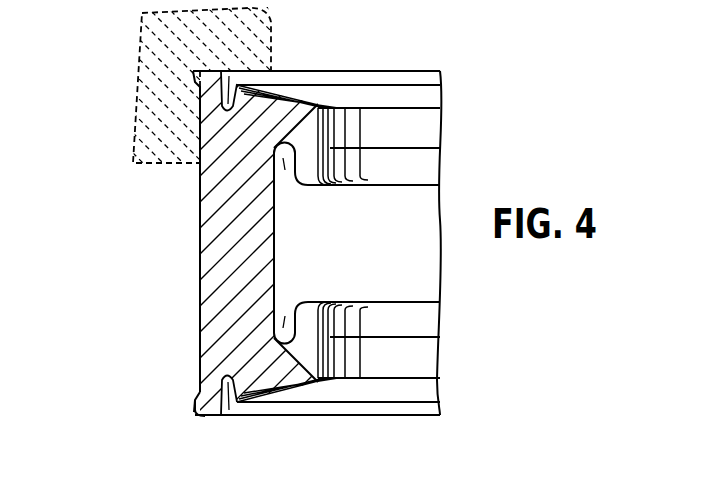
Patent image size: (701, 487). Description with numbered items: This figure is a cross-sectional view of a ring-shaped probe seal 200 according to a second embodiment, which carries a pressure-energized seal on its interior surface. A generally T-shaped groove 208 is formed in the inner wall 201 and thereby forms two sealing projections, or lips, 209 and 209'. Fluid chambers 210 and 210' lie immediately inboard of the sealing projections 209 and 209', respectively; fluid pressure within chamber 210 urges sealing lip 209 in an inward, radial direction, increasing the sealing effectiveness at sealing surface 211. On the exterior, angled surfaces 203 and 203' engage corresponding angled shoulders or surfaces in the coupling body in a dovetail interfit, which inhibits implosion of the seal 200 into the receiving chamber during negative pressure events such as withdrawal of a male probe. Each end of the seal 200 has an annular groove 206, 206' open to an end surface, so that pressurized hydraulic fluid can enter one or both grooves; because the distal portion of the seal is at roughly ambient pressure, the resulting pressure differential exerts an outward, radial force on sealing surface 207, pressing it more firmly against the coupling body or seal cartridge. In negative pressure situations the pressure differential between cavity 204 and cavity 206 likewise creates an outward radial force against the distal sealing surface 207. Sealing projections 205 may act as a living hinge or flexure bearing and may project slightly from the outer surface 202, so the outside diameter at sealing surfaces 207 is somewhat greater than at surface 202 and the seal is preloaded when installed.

The probe seal 200 is at (470, 98).
The inner wall 201 is at (421, 140).
The outer surface 202 is at (200, 291).
The angled surface 203 is at (309, 104).
The angled surface 203' is at (311, 385).
The cavity 204 is at (199, 168).
The sealing projection 205 is at (201, 417).
The annular groove 206 is at (136, 62).
The annular groove 206' is at (234, 426).
The sealing surface 207 is at (193, 410).
The T-shaped groove 208 is at (281, 252).
The sealing projection 209 is at (422, 164).
The sealing projection 209' is at (429, 321).
The fluid chamber 210 is at (338, 189).
The fluid chamber 210' is at (339, 300).
The sealing surface 211 is at (365, 300).